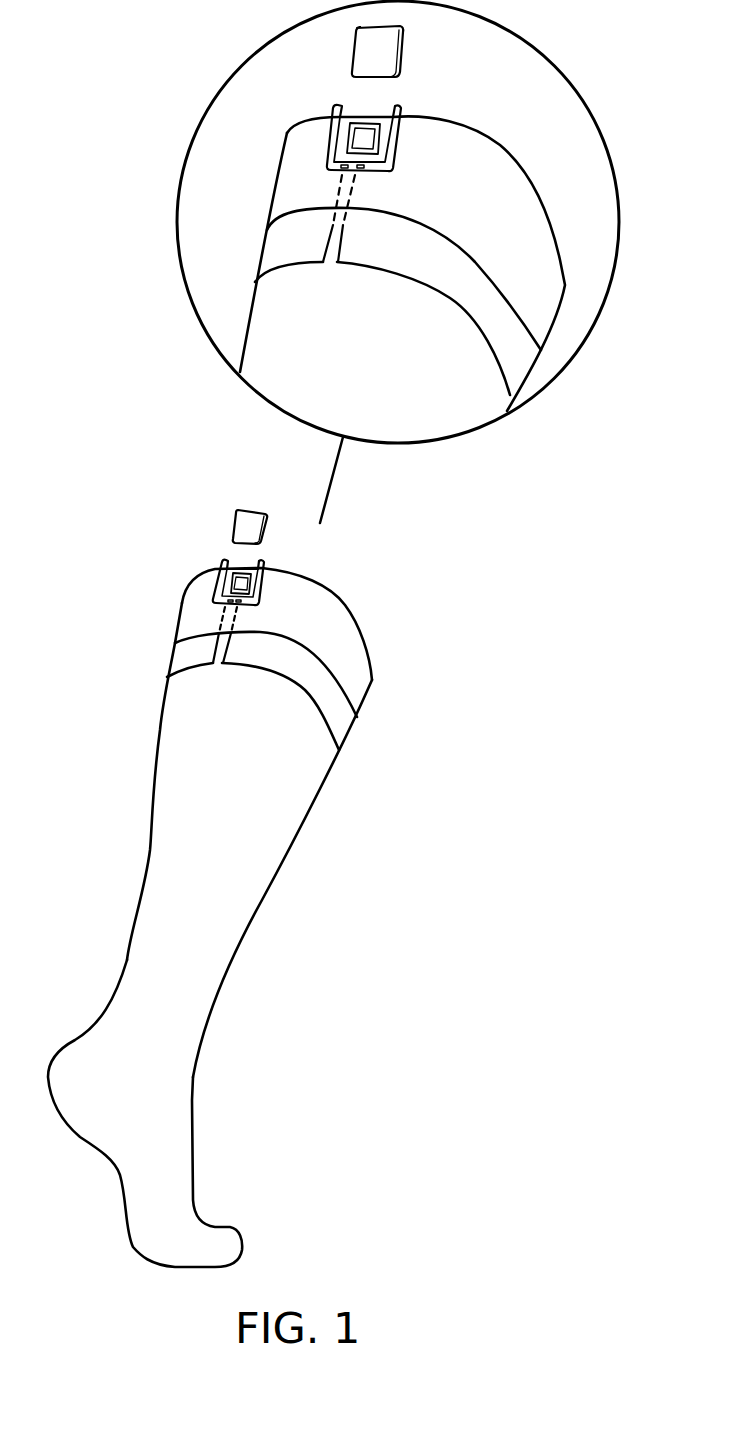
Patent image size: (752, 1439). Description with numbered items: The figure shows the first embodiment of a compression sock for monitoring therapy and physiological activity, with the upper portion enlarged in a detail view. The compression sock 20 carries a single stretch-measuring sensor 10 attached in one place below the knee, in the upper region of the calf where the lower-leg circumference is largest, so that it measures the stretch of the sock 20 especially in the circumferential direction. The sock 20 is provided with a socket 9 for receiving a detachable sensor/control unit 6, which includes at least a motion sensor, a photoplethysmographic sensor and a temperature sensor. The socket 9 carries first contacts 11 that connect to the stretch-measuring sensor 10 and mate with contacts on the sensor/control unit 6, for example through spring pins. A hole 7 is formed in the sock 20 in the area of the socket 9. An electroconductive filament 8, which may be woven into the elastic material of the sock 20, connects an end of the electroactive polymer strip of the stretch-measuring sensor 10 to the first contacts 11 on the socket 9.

The sensor/control unit 6 is at (370, 58).
The hole 7 is at (360, 136).
The electroconductive filament 8 is at (333, 206).
The socket 9 is at (397, 150).
The stretch-measuring sensor 10 is at (320, 690).
The first contacts 11 is at (333, 163).
The compression sock 20 is at (230, 903).